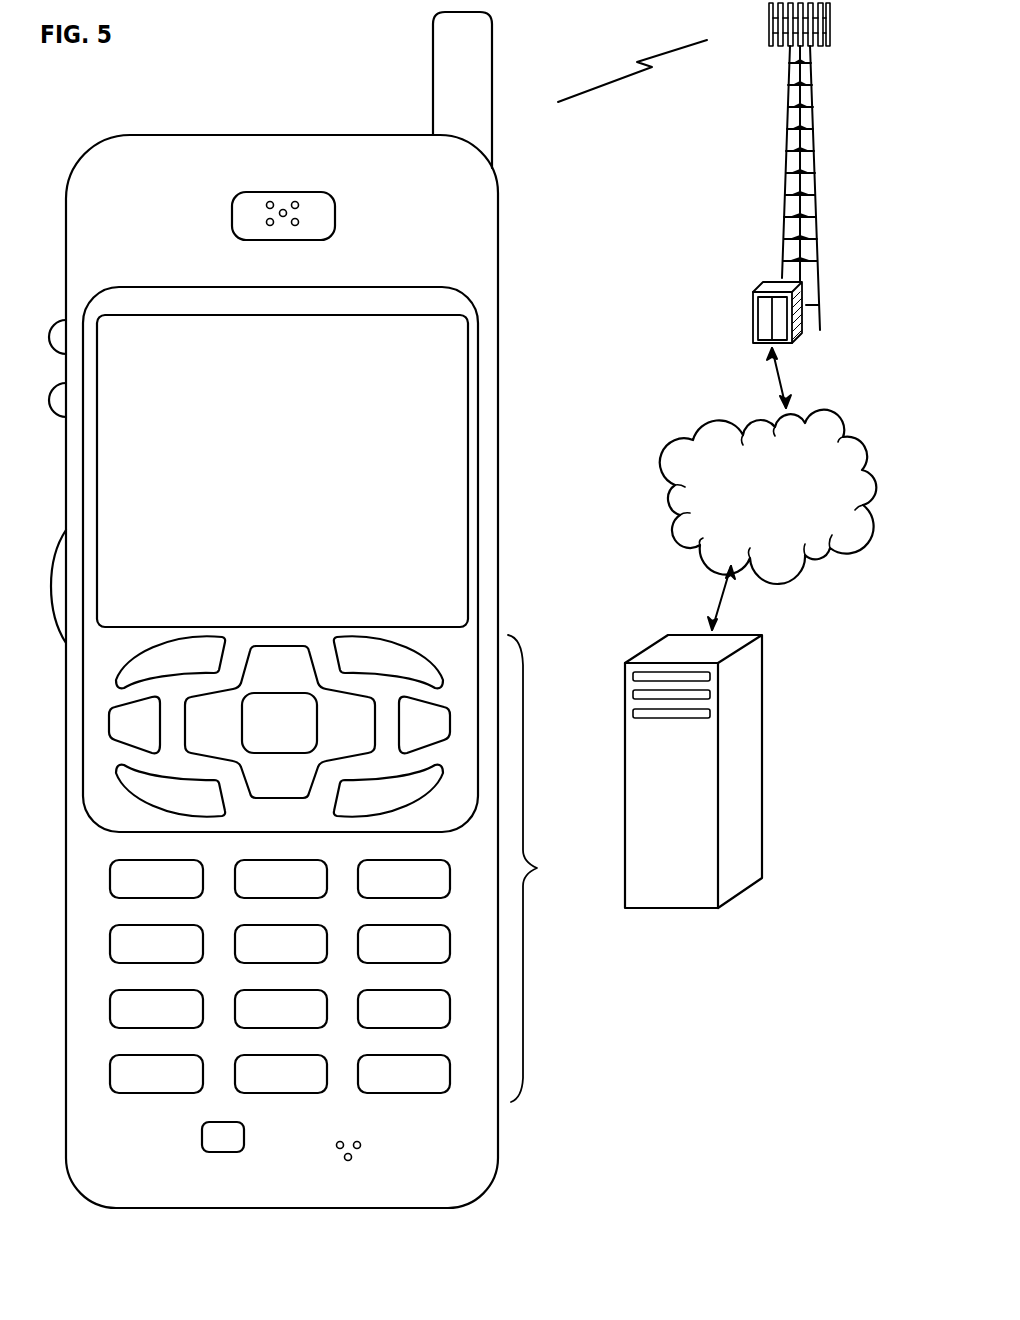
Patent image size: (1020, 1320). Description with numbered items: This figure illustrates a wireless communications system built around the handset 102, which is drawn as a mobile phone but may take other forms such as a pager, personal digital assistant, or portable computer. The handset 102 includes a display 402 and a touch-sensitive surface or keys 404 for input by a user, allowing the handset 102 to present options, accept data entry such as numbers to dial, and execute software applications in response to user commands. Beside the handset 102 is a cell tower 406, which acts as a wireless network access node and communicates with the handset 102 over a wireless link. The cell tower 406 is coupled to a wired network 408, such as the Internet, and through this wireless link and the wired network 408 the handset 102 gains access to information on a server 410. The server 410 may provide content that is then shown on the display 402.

The handset 102 is at (118, 1202).
The display 402 is at (474, 331).
The keys 404 is at (341, 868).
The cell tower 406 is at (785, 188).
The wired network 408 is at (688, 541).
The server 410 is at (671, 905).